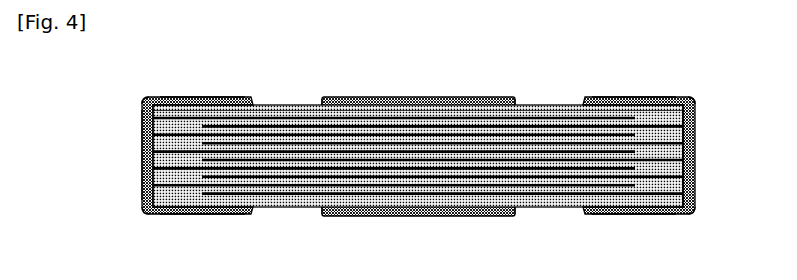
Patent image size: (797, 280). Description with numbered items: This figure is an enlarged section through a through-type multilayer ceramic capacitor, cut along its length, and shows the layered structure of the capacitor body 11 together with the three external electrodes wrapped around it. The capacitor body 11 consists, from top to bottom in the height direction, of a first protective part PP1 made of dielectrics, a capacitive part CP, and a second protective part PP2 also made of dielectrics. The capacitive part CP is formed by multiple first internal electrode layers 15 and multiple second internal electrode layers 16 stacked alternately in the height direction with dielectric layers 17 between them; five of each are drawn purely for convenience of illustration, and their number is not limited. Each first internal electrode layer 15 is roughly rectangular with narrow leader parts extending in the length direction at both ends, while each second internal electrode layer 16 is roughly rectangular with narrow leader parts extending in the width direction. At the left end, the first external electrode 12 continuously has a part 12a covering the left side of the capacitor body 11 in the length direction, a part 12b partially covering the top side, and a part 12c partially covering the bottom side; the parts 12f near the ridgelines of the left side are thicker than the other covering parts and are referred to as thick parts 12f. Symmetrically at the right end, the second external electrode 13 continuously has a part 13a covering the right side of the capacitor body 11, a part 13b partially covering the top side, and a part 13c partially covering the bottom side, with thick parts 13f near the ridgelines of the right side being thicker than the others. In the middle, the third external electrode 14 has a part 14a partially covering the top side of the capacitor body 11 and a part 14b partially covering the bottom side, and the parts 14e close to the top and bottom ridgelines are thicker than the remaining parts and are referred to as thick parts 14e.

The capacitor body 11 is at (283, 105).
The first external electrode 12 is at (190, 97).
The part covering one side in the length direction 12a is at (142, 148).
The part partially covering one side in the height direction 12b is at (212, 97).
The part partially covering the other side in the height direction 12c is at (210, 214).
The thick parts 12f is at (147, 96).
The second external electrode 13 is at (643, 97).
The part covering the other side in the length direction 13a is at (693, 133).
The part partially covering one side in the height direction 13b is at (627, 97).
The part partially covering the other side in the height direction 13c is at (627, 214).
The thick parts 13f is at (688, 96).
The third external electrode 14 is at (418, 159).
The part partially covering one side in the height direction 14a is at (352, 97).
The part partially covering the other side in the height direction 14b is at (352, 216).
The thick parts 14e is at (467, 97).
The first internal electrode layer 15 is at (525, 110).
The second internal electrode layer 16 is at (553, 121).
The dielectric layer 17 is at (578, 116).
The first protective part PP1 is at (696, 107).
The second protective part PP2 is at (696, 195).
The capacitive part CP is at (712, 118).